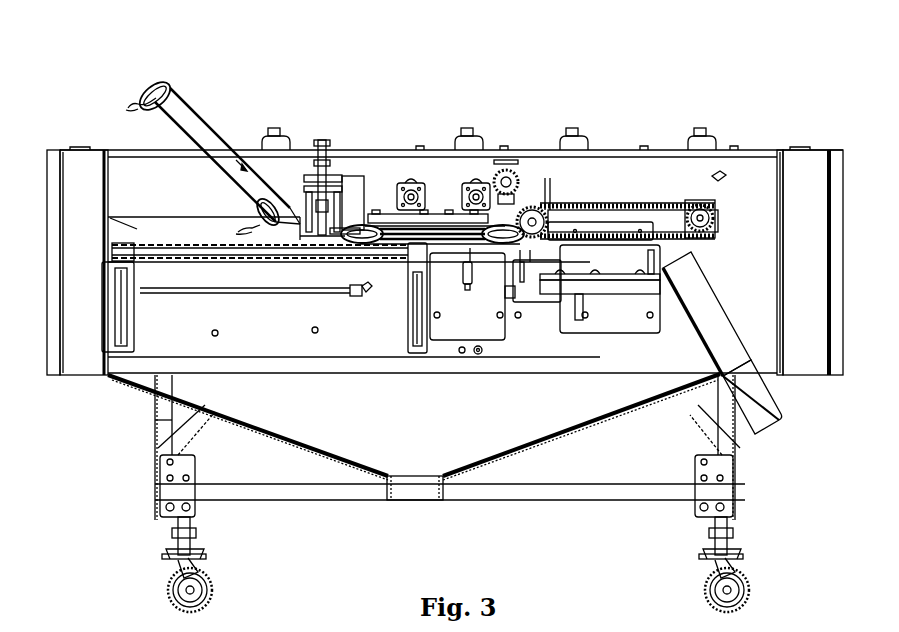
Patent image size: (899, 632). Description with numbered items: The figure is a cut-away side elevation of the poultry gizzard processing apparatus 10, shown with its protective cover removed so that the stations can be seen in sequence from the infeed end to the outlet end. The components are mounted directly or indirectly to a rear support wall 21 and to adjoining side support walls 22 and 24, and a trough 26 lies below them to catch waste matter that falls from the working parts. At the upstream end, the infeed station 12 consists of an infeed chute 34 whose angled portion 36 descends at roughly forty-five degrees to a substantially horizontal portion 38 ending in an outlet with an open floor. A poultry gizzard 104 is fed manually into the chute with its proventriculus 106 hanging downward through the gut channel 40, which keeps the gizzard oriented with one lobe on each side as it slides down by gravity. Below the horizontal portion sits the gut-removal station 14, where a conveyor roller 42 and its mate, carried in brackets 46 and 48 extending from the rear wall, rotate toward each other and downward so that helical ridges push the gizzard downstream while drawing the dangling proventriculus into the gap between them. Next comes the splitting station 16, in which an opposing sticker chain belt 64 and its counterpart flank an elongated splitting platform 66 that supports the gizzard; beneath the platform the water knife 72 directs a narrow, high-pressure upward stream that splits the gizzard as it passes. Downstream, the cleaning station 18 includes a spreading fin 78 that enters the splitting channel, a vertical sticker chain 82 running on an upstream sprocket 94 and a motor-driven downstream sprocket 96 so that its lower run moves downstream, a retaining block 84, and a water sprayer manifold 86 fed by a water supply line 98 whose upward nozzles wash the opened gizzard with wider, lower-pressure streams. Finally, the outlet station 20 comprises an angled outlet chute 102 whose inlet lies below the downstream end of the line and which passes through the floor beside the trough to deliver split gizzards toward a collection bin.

The apparatus 10 is at (792, 50).
The infeed station 12 is at (228, 140).
The gut-removal station 14 is at (333, 262).
The splitting station 16 is at (457, 214).
The cleaning station 18 is at (560, 200).
The outlet station 20 is at (722, 288).
The rear support wall 21 is at (346, 320).
The side support wall 22 is at (80, 330).
The side support wall 24 is at (808, 338).
The trough 26 is at (285, 405).
The infeed chute 34 is at (205, 125).
The angled portion 36 is at (252, 185).
The horizontal portion 38 is at (327, 233).
The gut channel 40 is at (452, 493).
The conveyor roller 42 is at (150, 258).
The bracket 46 is at (118, 268).
The bracket 48 is at (415, 253).
The sticker chain belt 64 is at (443, 215).
The splitting platform 66 is at (471, 233).
The water knife 72 is at (466, 268).
The spreading fin 78 is at (518, 312).
The sticker chain 82 is at (630, 205).
The retaining block 84 is at (607, 240).
The water sprayer manifold 86 is at (612, 292).
The sprocket 94 is at (531, 220).
The sprocket 96 is at (700, 204).
The water supply line 98 is at (530, 300).
The outlet chute 102 is at (775, 400).
The poultry gizzard 104 is at (160, 84).
The proventriculus 106 is at (135, 102).